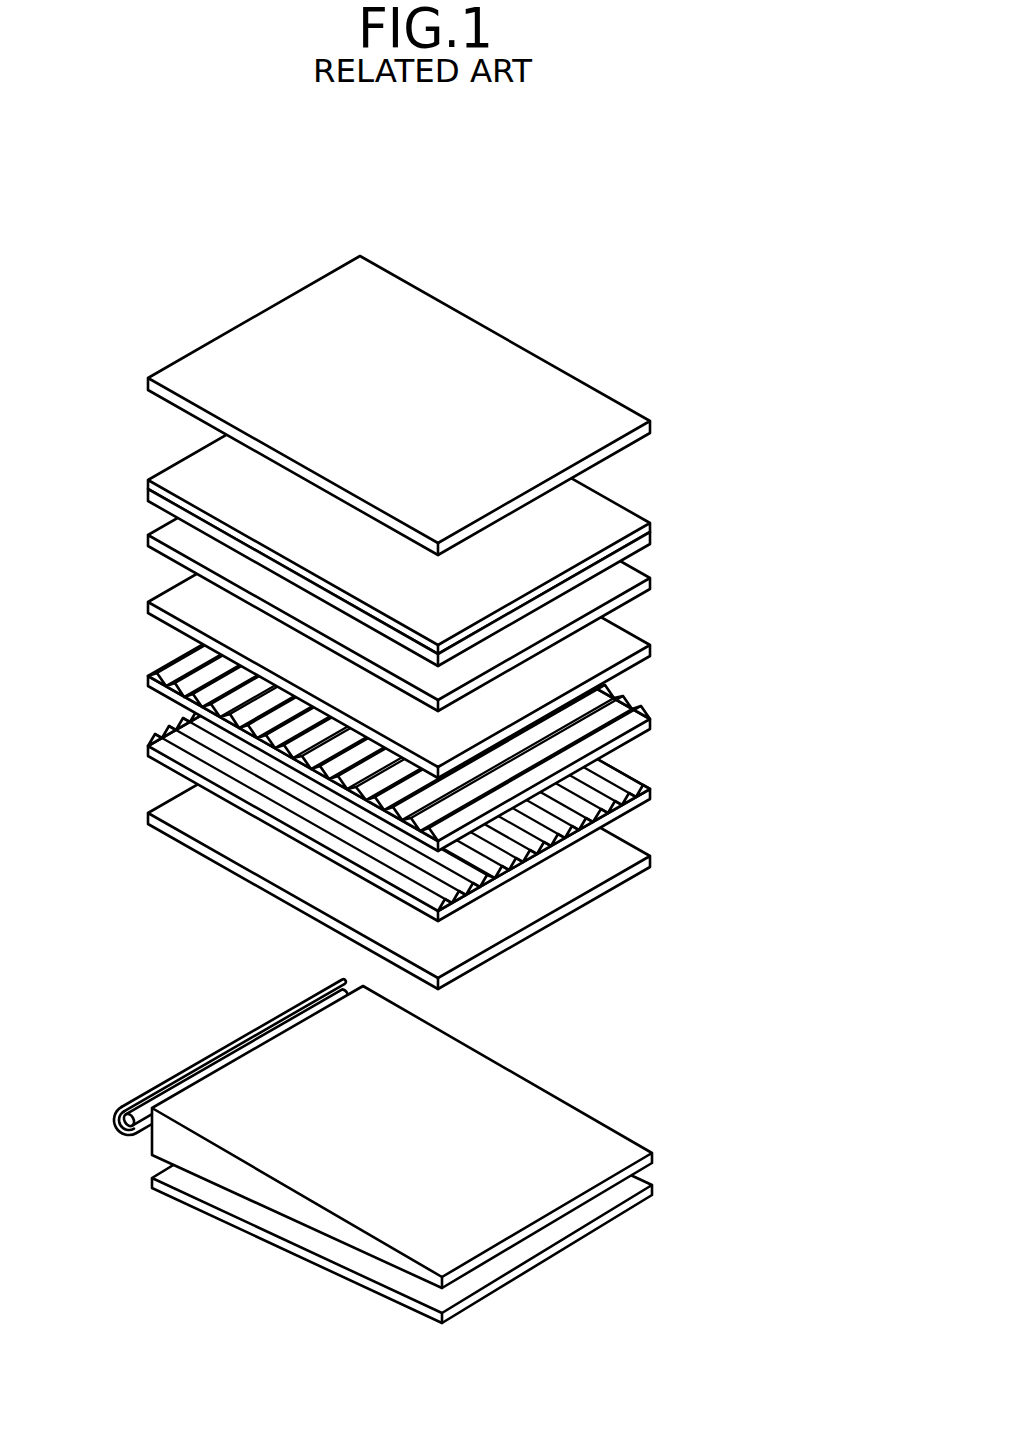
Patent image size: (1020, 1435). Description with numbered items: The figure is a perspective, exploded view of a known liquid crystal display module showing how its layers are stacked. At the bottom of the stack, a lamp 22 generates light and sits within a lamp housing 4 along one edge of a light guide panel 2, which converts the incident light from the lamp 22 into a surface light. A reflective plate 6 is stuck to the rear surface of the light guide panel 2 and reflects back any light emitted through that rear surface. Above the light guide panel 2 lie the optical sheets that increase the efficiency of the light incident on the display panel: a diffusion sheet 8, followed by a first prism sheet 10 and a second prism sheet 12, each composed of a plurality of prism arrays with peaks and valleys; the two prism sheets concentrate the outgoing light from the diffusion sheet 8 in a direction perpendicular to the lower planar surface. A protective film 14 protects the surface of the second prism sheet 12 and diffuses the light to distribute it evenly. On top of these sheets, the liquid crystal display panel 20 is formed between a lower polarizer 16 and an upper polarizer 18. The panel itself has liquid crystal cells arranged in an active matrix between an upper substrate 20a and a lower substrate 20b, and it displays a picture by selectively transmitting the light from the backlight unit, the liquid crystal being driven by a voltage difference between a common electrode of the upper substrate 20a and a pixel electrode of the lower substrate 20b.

The light guide panel 2 is at (508, 1078).
The lamp housing 4 is at (122, 1102).
The reflective plate 6 is at (328, 1262).
The diffusion sheet 8 is at (652, 866).
The first prism sheet 10 is at (652, 790).
The second prism sheet 12 is at (652, 712).
The protective film 14 is at (652, 642).
The lower polarizer 16 is at (652, 590).
The upper polarizer 18 is at (652, 422).
The liquid crystal display panel 20 is at (471, 512).
The upper substrate 20a is at (652, 526).
The lower substrate 20b is at (652, 543).
The lamp 22 is at (118, 1125).